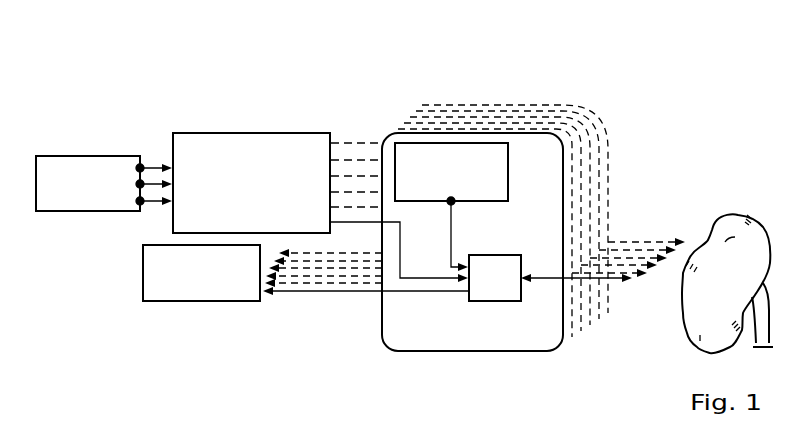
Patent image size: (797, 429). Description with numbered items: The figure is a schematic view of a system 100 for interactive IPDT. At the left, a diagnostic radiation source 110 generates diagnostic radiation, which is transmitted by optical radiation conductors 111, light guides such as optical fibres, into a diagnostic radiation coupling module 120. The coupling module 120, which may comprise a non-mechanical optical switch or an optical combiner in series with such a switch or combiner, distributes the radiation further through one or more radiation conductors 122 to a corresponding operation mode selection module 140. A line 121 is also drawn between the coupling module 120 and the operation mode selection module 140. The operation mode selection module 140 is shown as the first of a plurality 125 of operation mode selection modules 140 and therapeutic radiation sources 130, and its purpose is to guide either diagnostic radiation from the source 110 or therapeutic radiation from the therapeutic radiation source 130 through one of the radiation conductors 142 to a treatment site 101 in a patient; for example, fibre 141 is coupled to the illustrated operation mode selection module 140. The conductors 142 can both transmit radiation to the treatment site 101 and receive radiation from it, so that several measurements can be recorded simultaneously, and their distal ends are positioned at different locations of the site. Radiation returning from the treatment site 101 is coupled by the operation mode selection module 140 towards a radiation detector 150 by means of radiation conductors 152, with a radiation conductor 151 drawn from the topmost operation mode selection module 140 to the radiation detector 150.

The system 100 is at (413, 65).
The treatment site 101 is at (692, 348).
The diagnostic radiation source 110 is at (86, 155).
The optical radiation conductors 111 is at (151, 160).
The diagnostic radiation coupling module 120 is at (249, 132).
The control line 121 is at (365, 222).
The radiation conductors 122 is at (360, 129).
The plurality of operation mode selection modules and therapeutic radiation sources 125 is at (382, 352).
The therapeutic radiation source 130 is at (485, 202).
The operation mode selection module 140 is at (493, 302).
The fibre 141 is at (613, 282).
The radiation conductors 142 is at (646, 222).
The radiation detector 150 is at (188, 302).
The radiation conductor 151 is at (312, 293).
The radiation conductors 152 is at (351, 306).